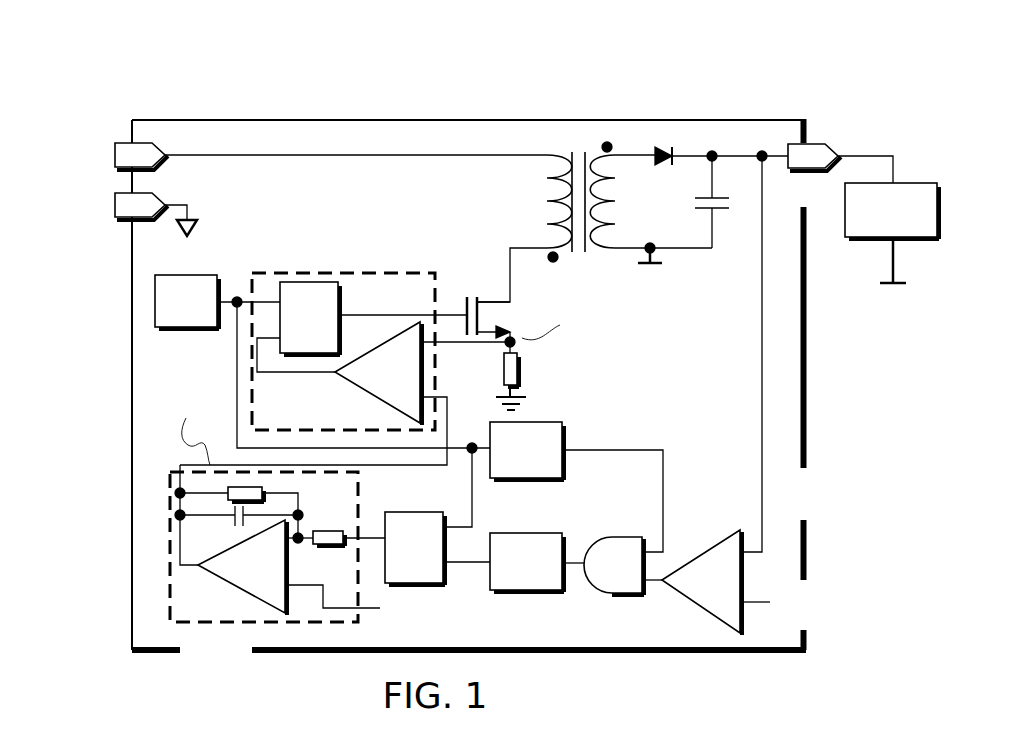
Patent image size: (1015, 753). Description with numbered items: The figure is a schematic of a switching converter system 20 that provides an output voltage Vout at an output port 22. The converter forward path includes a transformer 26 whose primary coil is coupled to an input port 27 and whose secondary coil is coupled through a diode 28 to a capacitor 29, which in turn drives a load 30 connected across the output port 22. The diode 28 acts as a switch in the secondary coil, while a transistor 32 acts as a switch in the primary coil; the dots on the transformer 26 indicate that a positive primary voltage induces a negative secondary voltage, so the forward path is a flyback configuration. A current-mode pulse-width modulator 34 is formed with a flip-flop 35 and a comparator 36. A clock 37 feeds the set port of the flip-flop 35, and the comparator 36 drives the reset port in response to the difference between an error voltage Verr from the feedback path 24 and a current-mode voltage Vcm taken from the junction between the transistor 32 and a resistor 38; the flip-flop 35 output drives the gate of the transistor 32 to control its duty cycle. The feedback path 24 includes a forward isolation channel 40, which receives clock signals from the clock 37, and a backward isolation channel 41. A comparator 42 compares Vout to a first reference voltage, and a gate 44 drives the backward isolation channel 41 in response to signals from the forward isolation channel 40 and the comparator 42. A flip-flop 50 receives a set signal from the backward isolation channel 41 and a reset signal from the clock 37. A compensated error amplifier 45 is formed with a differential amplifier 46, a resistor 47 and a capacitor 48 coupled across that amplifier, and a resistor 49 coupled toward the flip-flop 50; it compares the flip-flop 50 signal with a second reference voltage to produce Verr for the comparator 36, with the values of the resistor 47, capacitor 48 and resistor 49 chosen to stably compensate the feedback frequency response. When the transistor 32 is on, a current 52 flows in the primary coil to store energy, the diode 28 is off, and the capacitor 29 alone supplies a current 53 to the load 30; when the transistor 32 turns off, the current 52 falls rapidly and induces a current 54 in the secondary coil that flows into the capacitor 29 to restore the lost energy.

The switching converter system 20 is at (379, 120).
The output port 22 is at (820, 130).
The feedback path 24 is at (787, 505).
The transformer 26 is at (630, 212).
The input port 27 is at (122, 143).
The diode 28 is at (721, 144).
The capacitor 29 is at (722, 202).
The load 30 is at (915, 183).
The transistor 32 is at (471, 305).
The current-mode pulse-width modulator 34 is at (392, 273).
The flip-flop 35 is at (345, 327).
The comparator 36 is at (345, 393).
The clock 37 is at (200, 272).
The resistor 38 is at (552, 358).
The forward isolation channel 40 is at (566, 432).
The backward isolation channel 41 is at (568, 583).
The comparator 42 is at (746, 582).
The gate 44 is at (623, 566).
The compensated error amplifier 45 is at (219, 624).
The differential amplifier 46 is at (318, 570).
The resistor 47 is at (238, 515).
The capacitor 48 is at (239, 526).
The resistor 49 is at (335, 524).
The flip-flop 50 is at (437, 514).
The current 52 is at (520, 326).
The current 53 is at (745, 255).
The current 54 is at (678, 238).